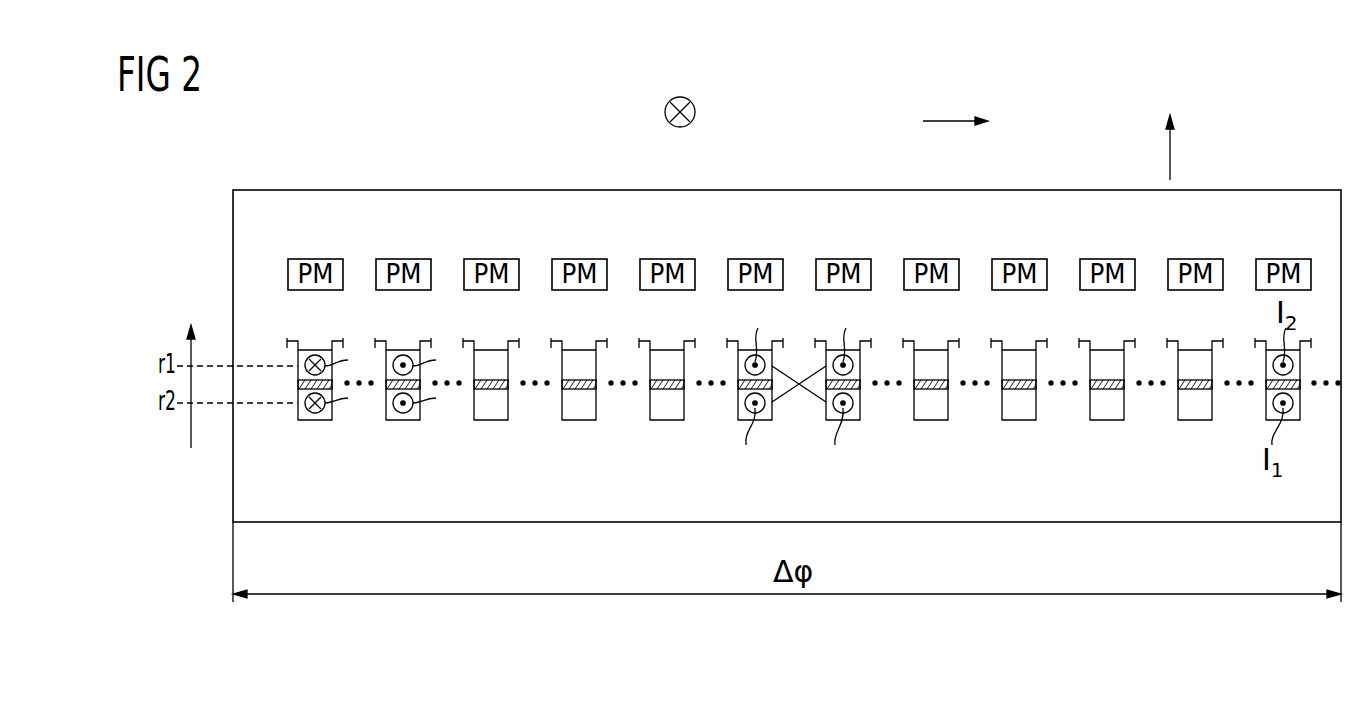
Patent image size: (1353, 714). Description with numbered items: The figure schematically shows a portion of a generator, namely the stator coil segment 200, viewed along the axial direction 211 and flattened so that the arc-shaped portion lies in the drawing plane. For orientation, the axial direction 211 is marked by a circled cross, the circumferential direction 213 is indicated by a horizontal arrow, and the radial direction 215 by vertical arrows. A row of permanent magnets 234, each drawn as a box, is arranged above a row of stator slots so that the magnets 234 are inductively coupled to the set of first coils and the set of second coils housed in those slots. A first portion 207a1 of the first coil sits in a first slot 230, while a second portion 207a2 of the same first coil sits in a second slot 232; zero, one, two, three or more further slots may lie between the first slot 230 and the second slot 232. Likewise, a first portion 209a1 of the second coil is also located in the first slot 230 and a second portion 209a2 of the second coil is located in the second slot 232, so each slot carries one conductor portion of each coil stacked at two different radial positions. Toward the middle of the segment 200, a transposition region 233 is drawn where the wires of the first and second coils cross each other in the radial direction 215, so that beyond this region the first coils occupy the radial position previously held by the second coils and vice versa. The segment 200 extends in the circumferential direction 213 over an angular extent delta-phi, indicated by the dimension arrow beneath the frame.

The stator coil segment 200 is at (446, 120).
The axial direction 211 is at (695, 110).
The circumferential direction 213 is at (950, 121).
The radial direction 215 is at (1172, 153).
The magnets 234 is at (799, 243).
The first portion of the first coil 207a1 is at (313, 354).
The second portion of the first coil 207a2 is at (402, 354).
The first portion of the second coil 209a1 is at (317, 418).
The second portion of the second coil 209a2 is at (403, 418).
The first slot 230 is at (308, 403).
The second slot 232 is at (424, 403).
The transposition region 233 is at (797, 444).